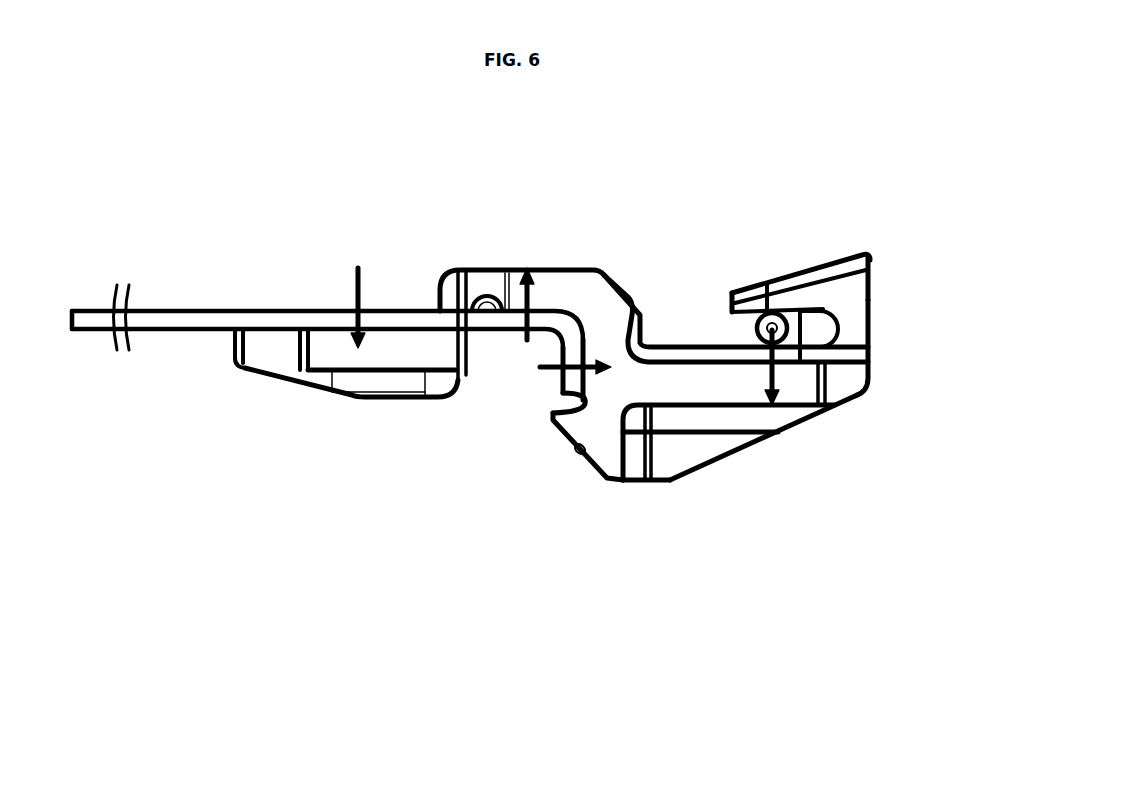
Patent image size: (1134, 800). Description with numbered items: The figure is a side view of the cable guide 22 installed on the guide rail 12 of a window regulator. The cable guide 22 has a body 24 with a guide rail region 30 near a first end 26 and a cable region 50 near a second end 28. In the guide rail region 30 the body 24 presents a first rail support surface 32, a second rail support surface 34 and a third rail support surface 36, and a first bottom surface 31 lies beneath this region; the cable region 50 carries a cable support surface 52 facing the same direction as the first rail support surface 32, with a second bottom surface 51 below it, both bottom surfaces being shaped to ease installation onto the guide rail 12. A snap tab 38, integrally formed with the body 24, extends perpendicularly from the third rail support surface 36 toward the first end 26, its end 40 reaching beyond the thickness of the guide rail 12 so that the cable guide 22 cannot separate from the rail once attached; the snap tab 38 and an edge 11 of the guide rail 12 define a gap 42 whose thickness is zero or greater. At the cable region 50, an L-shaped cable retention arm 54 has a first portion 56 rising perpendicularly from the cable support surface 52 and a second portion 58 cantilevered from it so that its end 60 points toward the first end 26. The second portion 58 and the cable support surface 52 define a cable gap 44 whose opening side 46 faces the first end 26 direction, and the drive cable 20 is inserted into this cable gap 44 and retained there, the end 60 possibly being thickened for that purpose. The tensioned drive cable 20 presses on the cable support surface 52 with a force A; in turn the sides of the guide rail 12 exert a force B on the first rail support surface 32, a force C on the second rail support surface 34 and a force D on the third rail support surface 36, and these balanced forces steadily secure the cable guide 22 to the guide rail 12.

The edge 11 is at (563, 392).
The guide rail 12 is at (177, 322).
The drive cable 20 is at (787, 337).
The cable guide 22 is at (416, 162).
The body 24 is at (448, 353).
The first end 26 is at (233, 335).
The second end 28 is at (870, 372).
The guide rail region 30 is at (237, 578).
The first bottom surface 31 is at (322, 373).
The first rail support surface 32 is at (313, 335).
The second rail support surface 34 is at (468, 340).
The third rail support surface 36 is at (553, 308).
The snap tab 38 is at (575, 445).
The end 40 is at (553, 420).
The gap 42 is at (547, 405).
The cable gap 44 is at (812, 325).
The opening side 46 is at (735, 325).
The cable region 50 is at (867, 578).
The second bottom surface 51 is at (710, 407).
The cable support surface 52 is at (690, 345).
The cable retention arm 54 is at (863, 258).
The first portion 56 is at (873, 292).
The second portion 58 is at (800, 294).
The end 60 is at (733, 300).
The force A is at (777, 370).
The force B is at (367, 300).
The force C is at (506, 300).
The force D is at (603, 353).